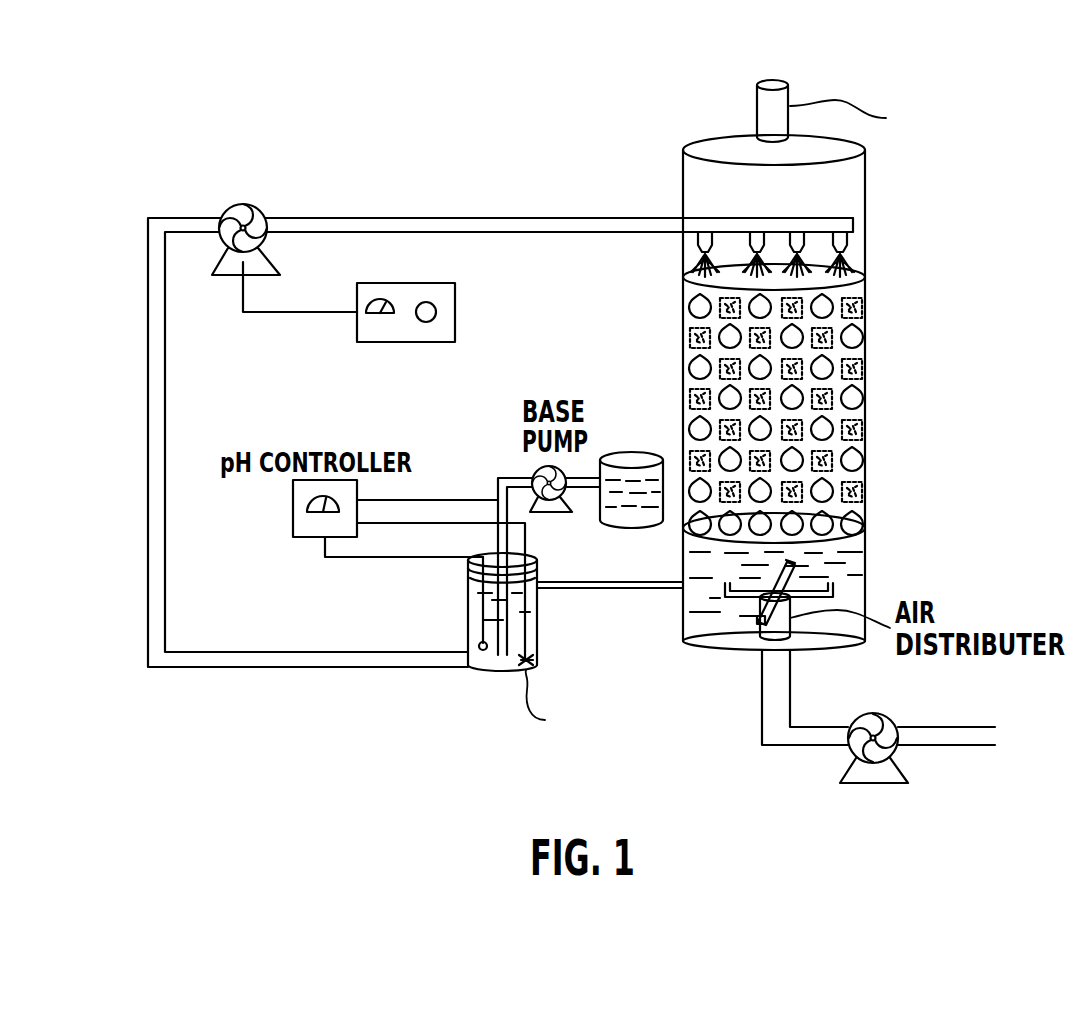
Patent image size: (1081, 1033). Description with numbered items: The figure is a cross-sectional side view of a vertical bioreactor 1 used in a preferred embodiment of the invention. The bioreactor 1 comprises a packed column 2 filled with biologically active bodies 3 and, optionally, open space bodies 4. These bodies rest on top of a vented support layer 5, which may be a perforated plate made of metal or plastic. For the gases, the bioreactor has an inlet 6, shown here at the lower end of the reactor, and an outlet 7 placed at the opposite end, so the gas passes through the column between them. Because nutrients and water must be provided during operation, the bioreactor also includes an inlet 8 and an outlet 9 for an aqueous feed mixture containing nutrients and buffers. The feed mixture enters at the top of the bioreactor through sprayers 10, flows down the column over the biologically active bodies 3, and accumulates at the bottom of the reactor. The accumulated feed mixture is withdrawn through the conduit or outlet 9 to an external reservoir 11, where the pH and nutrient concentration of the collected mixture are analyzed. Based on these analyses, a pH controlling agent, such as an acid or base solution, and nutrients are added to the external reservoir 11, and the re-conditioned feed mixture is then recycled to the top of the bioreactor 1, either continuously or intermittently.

The bioreactor 1 is at (906, 278).
The packed column 2 is at (875, 303).
The biologically active bodies 3 is at (688, 340).
The open space bodies 4 is at (690, 306).
The vented support layer 5 is at (868, 532).
The inlet 6 is at (762, 708).
The outlet 7 is at (789, 95).
The inlet 8 is at (548, 233).
The outlet 9 is at (620, 589).
The sprayers 10 is at (867, 240).
The external reservoir 11 is at (485, 670).